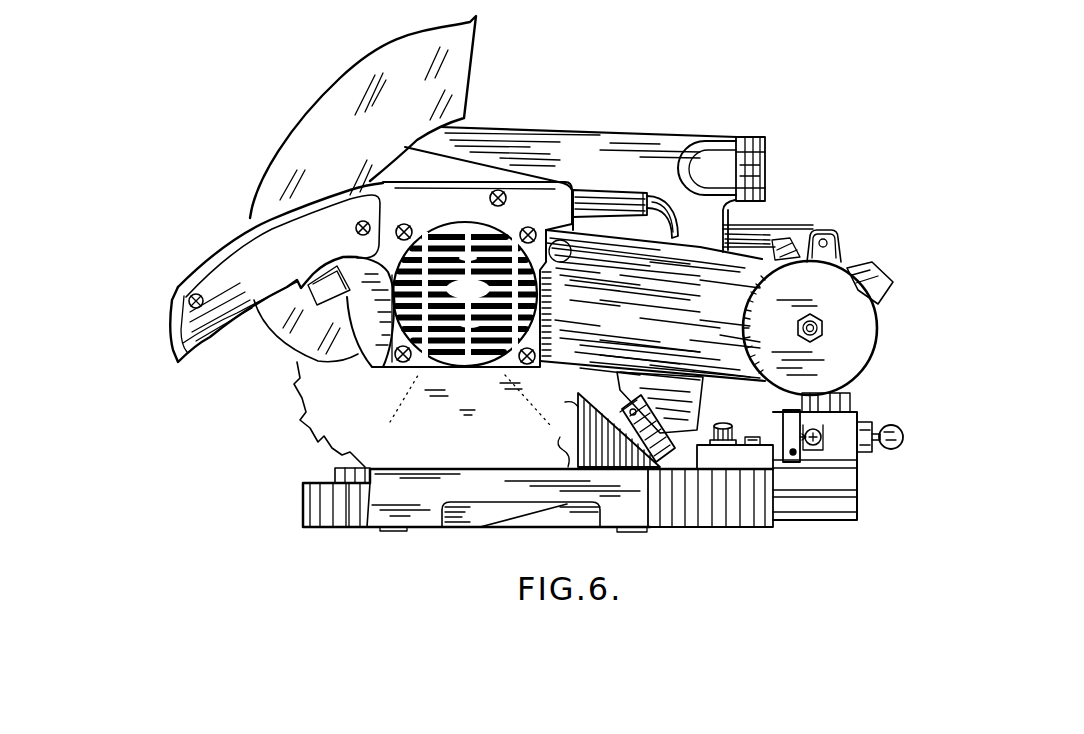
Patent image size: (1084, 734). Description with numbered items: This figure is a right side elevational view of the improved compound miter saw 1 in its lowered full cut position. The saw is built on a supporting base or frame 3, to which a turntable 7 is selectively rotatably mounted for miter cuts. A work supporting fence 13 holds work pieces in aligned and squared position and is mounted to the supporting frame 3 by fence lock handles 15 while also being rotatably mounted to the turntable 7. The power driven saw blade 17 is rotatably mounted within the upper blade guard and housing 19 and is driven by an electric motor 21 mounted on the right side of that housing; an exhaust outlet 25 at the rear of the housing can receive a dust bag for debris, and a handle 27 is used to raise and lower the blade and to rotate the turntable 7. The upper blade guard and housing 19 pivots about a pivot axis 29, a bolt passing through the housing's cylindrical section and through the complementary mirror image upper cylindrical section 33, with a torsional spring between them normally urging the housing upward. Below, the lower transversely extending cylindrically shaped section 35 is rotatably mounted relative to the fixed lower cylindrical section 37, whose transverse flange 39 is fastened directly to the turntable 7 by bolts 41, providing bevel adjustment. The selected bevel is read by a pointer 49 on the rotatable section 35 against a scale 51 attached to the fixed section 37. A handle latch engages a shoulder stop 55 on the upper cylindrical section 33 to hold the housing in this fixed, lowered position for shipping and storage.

The compound miter saw 1 is at (722, 112).
The supporting base or frame 3 is at (303, 527).
The turntable 7 is at (335, 477).
The work supporting fence 13 is at (577, 433).
The fence lock handles 15 is at (650, 443).
The power driven saw blade 17 is at (357, 392).
The upper blade guard and housing 19 is at (547, 123).
The electric motor 21 is at (462, 230).
The exhaust outlet 25 is at (763, 140).
The handle 27 is at (178, 287).
The pivot axis 29 is at (824, 318).
The upper cylindrical section 33 is at (845, 337).
The lower transversely extending cylindrically shaped section 35 is at (838, 502).
The lower cylindrical section 37 is at (818, 523).
The transverse flange 39 is at (722, 458).
The bolts 41 is at (736, 398).
The pointer 49 is at (818, 436).
The scale 51 is at (793, 457).
The shoulder stop 55 is at (878, 270).